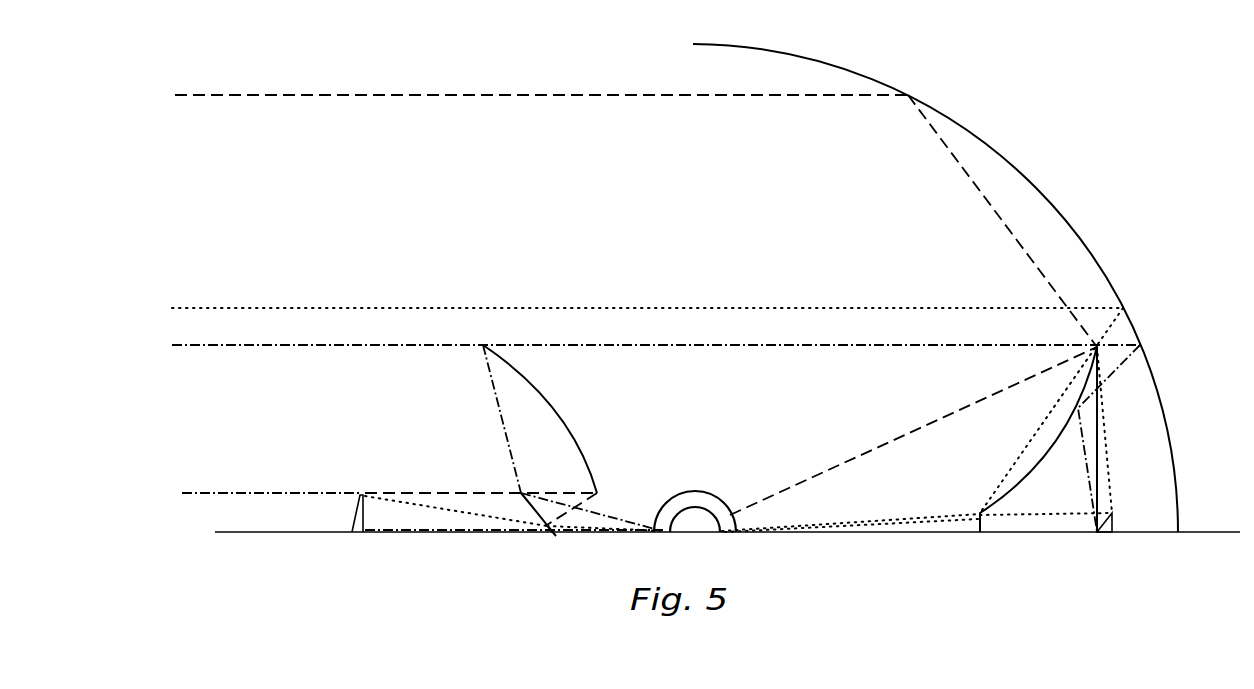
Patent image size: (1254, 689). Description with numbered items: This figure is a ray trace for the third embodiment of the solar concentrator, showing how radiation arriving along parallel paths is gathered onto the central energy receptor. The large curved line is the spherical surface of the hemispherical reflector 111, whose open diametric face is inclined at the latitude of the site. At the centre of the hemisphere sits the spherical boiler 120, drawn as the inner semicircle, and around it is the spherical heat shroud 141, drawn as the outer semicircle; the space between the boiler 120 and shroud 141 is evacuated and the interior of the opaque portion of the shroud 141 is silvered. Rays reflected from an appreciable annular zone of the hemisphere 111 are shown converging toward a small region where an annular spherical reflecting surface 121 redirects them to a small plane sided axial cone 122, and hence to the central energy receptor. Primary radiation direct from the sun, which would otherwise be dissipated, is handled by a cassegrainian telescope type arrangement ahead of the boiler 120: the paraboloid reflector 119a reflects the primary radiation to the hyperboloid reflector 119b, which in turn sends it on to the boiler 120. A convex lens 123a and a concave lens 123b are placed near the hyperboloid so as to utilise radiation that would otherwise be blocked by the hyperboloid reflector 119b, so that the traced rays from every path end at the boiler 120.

The hemispherical reflector 111 is at (990, 146).
The paraboloid reflector 119a is at (537, 388).
The hyperboloid reflector 119b is at (530, 511).
The spherical boiler 120 is at (695, 520).
The spherical heat shroud 141 is at (677, 495).
The annular spherical reflecting surface 121 is at (1080, 400).
The small plane sided axial cone 122 is at (1104, 528).
The convex lens 123a is at (352, 522).
The concave lens 123b is at (552, 532).